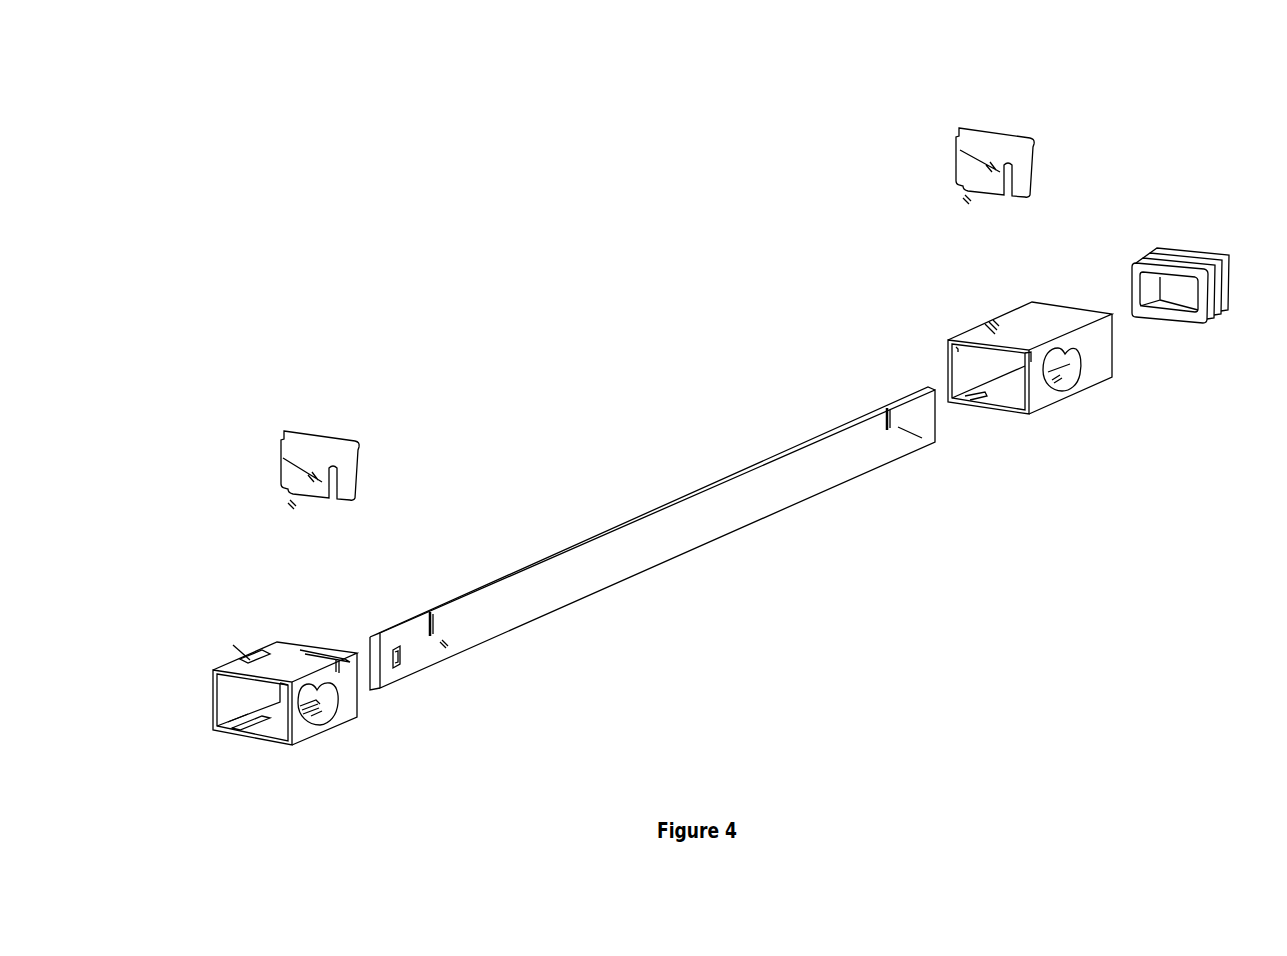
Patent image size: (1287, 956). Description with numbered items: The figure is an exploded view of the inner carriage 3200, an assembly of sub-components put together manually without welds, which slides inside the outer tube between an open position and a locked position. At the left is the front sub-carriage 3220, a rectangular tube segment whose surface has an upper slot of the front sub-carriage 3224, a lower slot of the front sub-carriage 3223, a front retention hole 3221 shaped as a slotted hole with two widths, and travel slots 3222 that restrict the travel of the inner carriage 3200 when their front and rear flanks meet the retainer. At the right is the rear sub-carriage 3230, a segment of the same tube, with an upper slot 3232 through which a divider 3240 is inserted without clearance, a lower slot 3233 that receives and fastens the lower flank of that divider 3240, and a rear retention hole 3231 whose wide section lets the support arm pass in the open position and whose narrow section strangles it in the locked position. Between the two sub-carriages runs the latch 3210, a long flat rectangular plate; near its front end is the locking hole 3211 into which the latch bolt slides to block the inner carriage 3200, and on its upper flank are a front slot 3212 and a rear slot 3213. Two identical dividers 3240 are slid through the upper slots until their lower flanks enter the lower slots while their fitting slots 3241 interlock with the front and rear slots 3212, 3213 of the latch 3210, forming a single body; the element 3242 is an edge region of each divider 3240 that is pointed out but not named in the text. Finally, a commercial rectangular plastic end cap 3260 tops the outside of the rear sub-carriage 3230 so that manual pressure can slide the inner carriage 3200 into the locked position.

The inner carriage 3200 is at (700, 412).
The latch 3210 is at (652, 538).
The locking hole 3211 is at (396, 646).
The front slot 3212 is at (445, 646).
The rear slot 3213 is at (922, 438).
The front sub-carriage 3220 is at (285, 677).
The front retention hole 3221 is at (313, 733).
The travel slots 3222 is at (230, 642).
The lower slot of the front sub-carriage 3223 is at (320, 717).
The upper slot of the front sub-carriage 3224 is at (310, 640).
The rear sub-carriage 3230 is at (1030, 342).
The rear retention hole 3231 is at (1075, 405).
The upper slot 3232 is at (987, 322).
The lower slot 3233 is at (973, 408).
The divider 3240 is at (320, 440).
The fitting slot 3241 is at (280, 456).
The clip edge 3242 is at (297, 503).
The end cap 3260 is at (1180, 269).